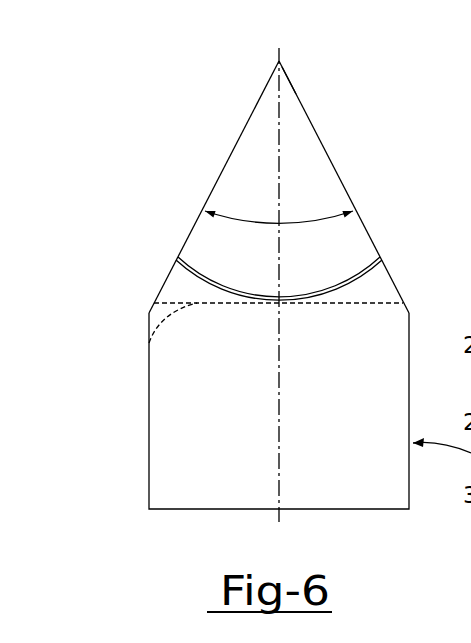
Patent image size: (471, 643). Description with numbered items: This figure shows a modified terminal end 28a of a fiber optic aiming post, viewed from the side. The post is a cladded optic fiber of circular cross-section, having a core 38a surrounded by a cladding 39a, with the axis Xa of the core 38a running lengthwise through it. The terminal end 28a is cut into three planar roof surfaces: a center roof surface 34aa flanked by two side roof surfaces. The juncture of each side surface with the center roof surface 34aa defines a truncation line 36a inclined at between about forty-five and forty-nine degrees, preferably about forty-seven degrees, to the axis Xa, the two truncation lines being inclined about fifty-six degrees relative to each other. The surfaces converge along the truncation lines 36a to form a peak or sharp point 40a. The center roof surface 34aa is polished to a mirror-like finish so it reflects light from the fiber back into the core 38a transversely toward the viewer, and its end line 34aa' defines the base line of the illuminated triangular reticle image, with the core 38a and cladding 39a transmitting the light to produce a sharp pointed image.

The terminal end 28a is at (327, 155).
The peak or sharp point 40a is at (280, 60).
The truncation line 36a is at (290, 87).
The center roof surface 34aa is at (239, 192).
The end line of the polished surface 34aa' is at (126, 328).
The cladding 39a is at (297, 300).
The axis Xa is at (280, 359).
The core 38a is at (358, 480).